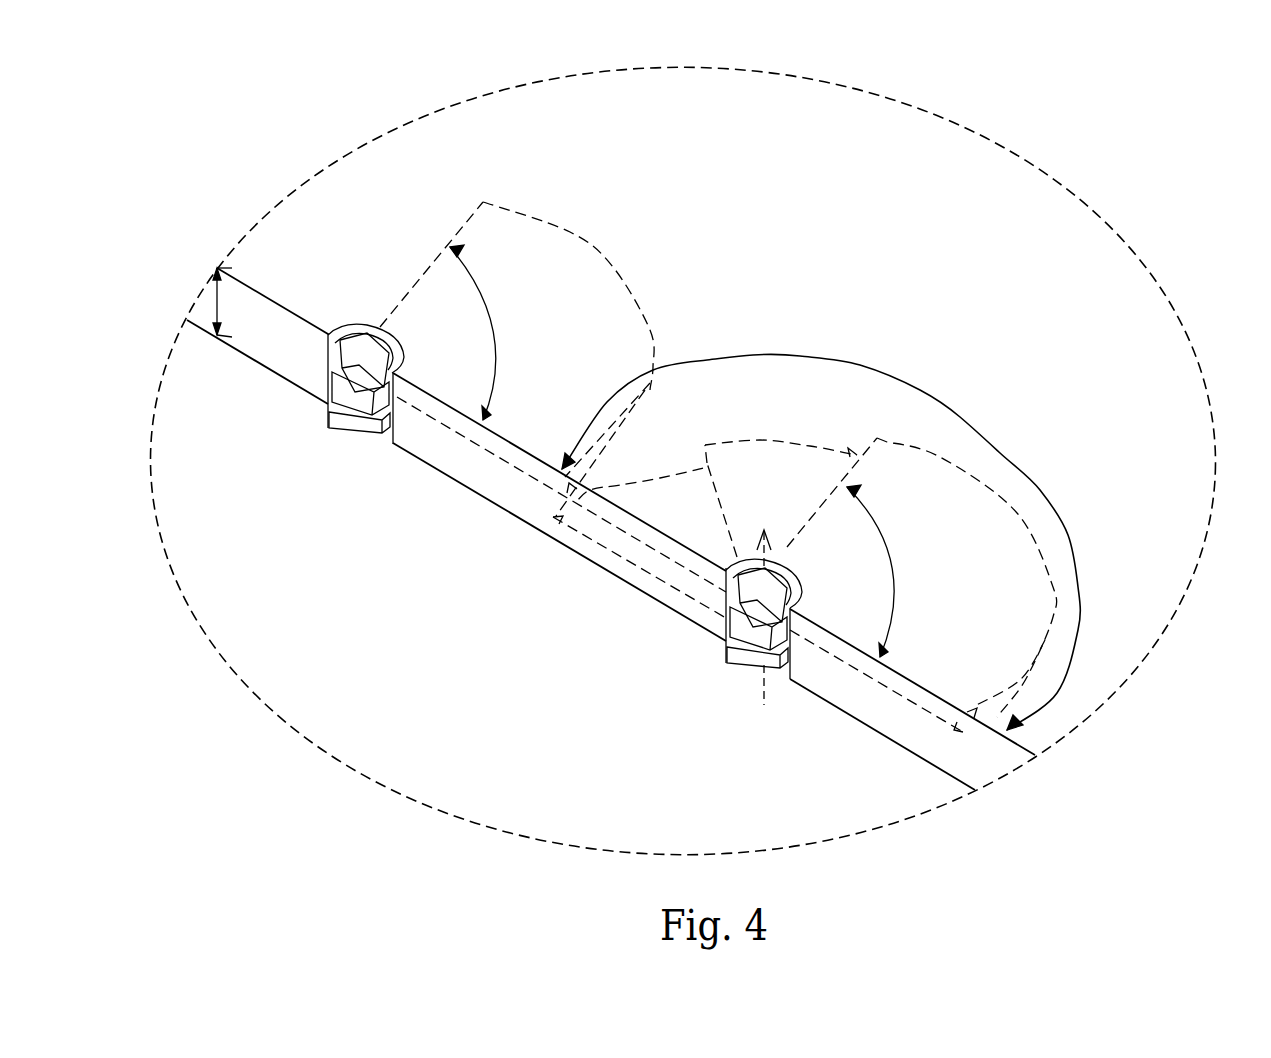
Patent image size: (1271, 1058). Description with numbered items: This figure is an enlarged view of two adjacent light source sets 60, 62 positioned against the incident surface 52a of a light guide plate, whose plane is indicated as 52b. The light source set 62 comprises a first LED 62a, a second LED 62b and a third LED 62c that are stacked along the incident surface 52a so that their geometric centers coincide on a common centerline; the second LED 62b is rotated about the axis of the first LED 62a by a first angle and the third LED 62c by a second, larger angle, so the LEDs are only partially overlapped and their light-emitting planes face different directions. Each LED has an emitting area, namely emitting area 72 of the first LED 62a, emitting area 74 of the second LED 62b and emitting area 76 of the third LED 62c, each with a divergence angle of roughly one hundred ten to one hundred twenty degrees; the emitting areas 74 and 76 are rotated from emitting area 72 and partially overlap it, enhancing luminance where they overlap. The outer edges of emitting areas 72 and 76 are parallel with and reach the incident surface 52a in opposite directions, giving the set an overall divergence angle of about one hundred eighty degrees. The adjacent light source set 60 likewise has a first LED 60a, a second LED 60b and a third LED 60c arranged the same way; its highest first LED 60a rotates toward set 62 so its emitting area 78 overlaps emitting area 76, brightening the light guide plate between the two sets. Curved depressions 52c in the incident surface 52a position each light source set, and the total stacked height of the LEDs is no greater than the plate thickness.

The incident surface 52a is at (480, 480).
The swing plane 52b is at (910, 265).
The depressions 52c is at (407, 358).
The light source set 60 is at (362, 433).
The first LED 60a is at (332, 356).
The second LED 60b is at (330, 392).
The third LED 60c is at (333, 436).
The light source set 62 is at (721, 638).
The first LED 62a is at (731, 588).
The second LED 62b is at (728, 628).
The third LED 62c is at (731, 672).
The emitting area 72 is at (916, 455).
The emitting area 74 is at (785, 445).
The emitting area 76 is at (688, 470).
The emitting area 78 is at (577, 248).